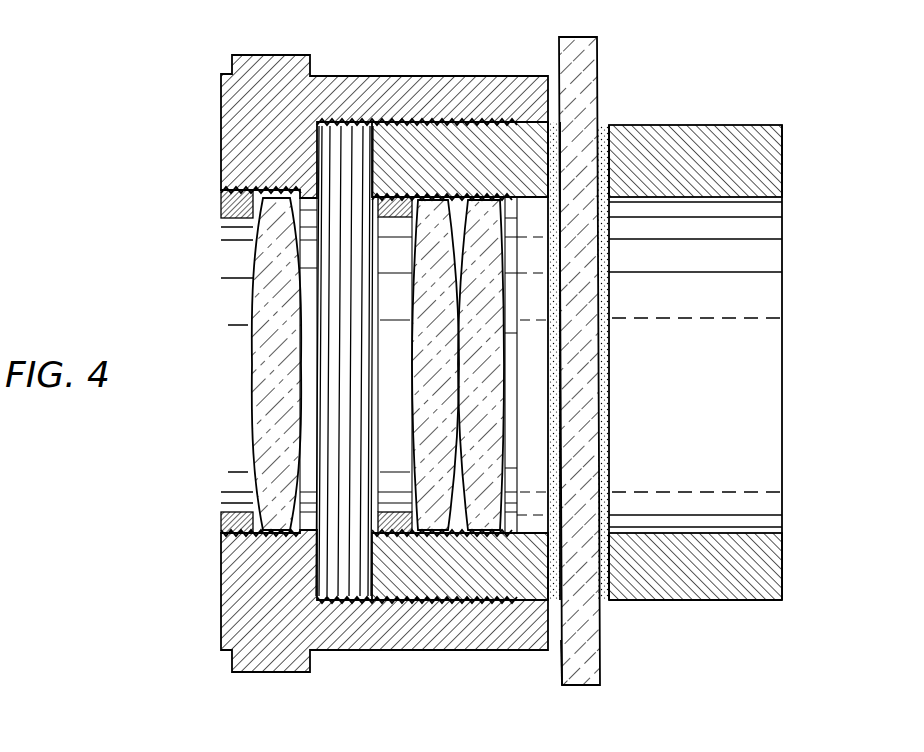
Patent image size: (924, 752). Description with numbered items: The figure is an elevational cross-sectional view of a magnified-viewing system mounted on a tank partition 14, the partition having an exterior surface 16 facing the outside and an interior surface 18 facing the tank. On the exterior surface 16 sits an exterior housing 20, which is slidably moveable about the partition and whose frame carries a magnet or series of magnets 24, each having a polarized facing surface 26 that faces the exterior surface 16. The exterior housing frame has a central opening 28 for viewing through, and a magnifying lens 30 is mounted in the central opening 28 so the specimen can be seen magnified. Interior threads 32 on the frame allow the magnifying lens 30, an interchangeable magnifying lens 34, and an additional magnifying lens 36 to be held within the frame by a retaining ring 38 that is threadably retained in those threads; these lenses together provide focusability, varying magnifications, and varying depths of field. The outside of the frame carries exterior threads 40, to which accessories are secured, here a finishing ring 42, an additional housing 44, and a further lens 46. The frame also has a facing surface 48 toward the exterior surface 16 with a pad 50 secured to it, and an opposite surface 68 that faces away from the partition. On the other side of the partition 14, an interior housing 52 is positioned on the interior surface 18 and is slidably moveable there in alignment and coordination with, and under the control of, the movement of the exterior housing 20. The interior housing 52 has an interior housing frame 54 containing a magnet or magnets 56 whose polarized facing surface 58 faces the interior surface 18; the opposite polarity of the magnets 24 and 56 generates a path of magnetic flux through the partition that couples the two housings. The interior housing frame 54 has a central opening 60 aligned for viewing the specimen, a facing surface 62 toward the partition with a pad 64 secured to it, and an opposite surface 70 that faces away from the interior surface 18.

The partition 14 is at (587, 662).
The exterior surface 16 is at (562, 668).
The interior surface 18 is at (597, 59).
The exterior housing 20 is at (389, 160).
The magnets 24 is at (460, 598).
The facing surface 26 is at (560, 157).
The central opening 28 is at (460, 205).
The magnifying lens 30 is at (484, 212).
The interior threads 32 is at (432, 572).
The interchangeable magnifying lens 34 is at (485, 513).
The additional magnifying lens 36 is at (437, 207).
The retaining ring 38 is at (222, 210).
The exterior threads 40 is at (327, 603).
The finishing ring 42 is at (240, 608).
The additional housing 44 is at (265, 85).
The further lens 46 is at (262, 312).
The facing surface 48 is at (556, 587).
The pad 50 is at (555, 124).
The interior housing 52 is at (773, 158).
The interior housing frame 54 is at (750, 592).
The magnets 56 is at (775, 568).
The facing surface 58 is at (605, 590).
The central opening 60 is at (748, 419).
The facing surface 62 is at (610, 503).
The pad 64 is at (606, 132).
The opposite surface 68 is at (782, 142).
The opposite surface 70 is at (367, 162).